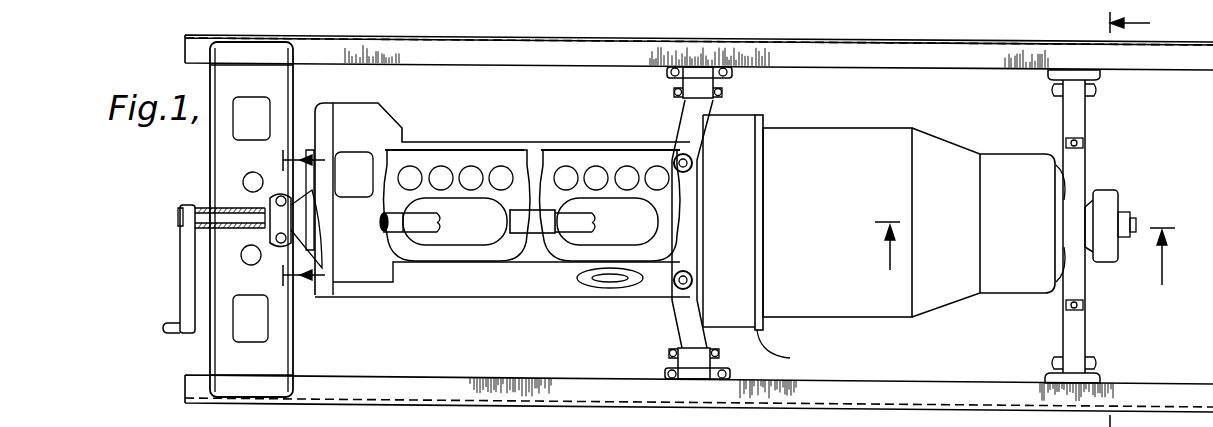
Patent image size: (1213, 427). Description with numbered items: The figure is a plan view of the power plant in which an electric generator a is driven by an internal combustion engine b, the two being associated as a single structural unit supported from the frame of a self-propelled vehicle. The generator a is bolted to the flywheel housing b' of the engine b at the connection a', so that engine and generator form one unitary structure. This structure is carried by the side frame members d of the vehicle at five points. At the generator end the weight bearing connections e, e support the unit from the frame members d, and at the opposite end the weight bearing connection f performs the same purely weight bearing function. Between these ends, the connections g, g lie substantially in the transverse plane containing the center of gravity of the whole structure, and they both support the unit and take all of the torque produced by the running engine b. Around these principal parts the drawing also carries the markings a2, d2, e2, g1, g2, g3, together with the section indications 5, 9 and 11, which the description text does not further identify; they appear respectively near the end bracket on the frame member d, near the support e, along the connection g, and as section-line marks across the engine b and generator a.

The electric generator a is at (910, 222).
The bolted connection a' is at (784, 351).
The adjusting screw shaft with crank a2 is at (230, 229).
The internal combustion engine b is at (502, 220).
The flywheel housing b' is at (729, 221).
The side frame member d is at (553, 58).
The end bracket d2 is at (294, 340).
The weight bearing connection e is at (1097, 80).
The bearing cap e2 is at (1082, 170).
The weight bearing connection f is at (273, 211).
The torque-taking connection g is at (670, 79).
The strap g1 is at (685, 245).
The bolt g2 is at (694, 282).
The lower strap portion g3 is at (688, 322).
The section line 5 is at (293, 218).
The section line 9 is at (1115, 219).
The section line 11 is at (1028, 242).